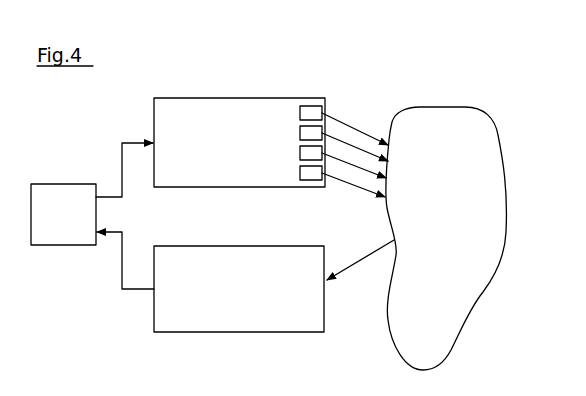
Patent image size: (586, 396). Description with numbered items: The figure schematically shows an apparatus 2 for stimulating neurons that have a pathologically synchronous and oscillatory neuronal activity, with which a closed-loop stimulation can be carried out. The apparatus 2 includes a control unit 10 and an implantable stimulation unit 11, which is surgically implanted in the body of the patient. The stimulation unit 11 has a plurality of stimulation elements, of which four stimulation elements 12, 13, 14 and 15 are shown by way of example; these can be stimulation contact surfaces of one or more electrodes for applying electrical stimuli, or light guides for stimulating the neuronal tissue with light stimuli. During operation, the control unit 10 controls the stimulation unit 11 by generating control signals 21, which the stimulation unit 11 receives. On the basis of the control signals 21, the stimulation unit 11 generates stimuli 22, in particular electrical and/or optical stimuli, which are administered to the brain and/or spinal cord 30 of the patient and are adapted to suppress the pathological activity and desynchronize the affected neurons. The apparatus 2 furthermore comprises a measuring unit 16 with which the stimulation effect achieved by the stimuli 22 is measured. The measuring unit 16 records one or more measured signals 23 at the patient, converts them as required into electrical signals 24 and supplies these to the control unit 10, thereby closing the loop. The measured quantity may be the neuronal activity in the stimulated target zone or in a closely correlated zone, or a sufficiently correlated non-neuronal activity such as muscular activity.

The apparatus 2 is at (249, 80).
The control unit 10 is at (60, 184).
The stimulation unit 11 is at (188, 98).
The stimulation element 12 is at (300, 113).
The stimulation element 13 is at (300, 133).
The stimulation element 14 is at (300, 153).
The stimulation element 15 is at (300, 173).
The measuring unit 16 is at (197, 246).
The control signals 21 is at (124, 140).
The stimuli 22 is at (343, 123).
The measured signals 23 is at (362, 263).
The electrical signals 24 is at (120, 264).
The brain and/or spinal cord 30 is at (405, 118).